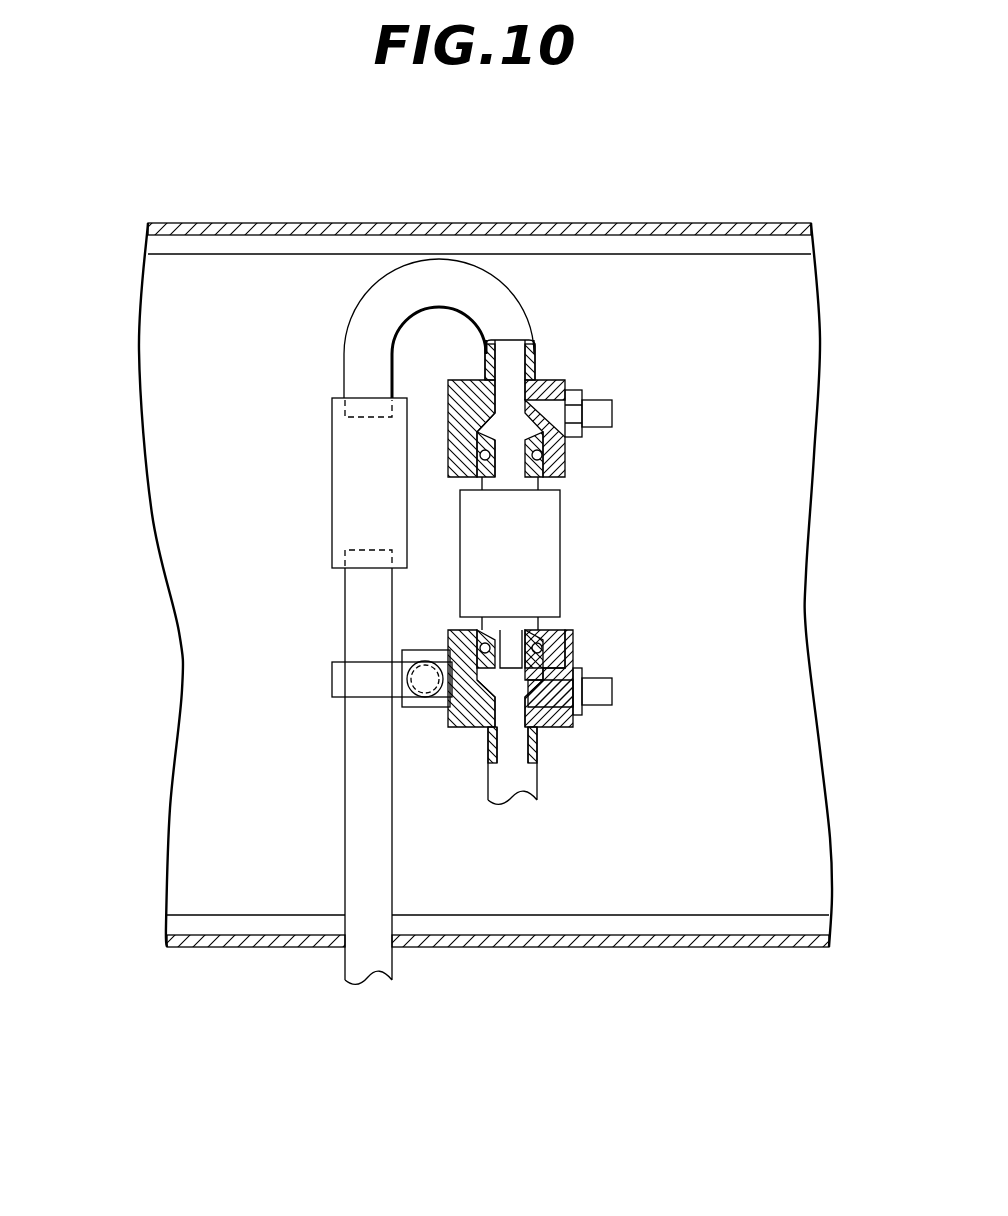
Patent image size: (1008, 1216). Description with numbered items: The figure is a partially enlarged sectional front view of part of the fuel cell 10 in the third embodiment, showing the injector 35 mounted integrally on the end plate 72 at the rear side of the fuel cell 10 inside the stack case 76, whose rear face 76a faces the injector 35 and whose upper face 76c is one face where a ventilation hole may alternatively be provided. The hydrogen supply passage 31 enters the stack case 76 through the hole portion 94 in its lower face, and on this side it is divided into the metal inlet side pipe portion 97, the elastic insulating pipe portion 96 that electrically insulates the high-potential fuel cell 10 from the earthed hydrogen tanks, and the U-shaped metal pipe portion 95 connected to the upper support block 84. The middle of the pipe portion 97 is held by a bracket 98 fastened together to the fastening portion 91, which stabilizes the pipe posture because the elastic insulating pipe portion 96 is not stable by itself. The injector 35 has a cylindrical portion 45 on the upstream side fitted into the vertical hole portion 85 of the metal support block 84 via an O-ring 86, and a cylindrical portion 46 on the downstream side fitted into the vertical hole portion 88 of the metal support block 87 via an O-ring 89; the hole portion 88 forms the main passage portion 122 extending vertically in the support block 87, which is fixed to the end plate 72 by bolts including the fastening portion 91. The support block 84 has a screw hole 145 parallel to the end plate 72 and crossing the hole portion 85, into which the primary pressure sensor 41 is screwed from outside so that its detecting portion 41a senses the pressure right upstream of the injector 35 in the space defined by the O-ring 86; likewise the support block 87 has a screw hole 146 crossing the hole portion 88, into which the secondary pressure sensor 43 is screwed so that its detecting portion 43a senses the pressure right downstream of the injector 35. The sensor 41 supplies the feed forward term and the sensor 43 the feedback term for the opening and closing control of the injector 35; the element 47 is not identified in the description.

The upper face 76c is at (323, 222).
The fuel cell 10 is at (130, 334).
The end plate 72 is at (815, 884).
The stack case 76 is at (207, 950).
The rear face 76a is at (255, 948).
The hole portion 94 is at (400, 950).
The pipe portion 95 is at (500, 298).
The insulating pipe portion 96 is at (345, 522).
The pipe portion 97 is at (355, 757).
The hydrogen supply passage 31 is at (347, 963).
The hole portion 85 is at (497, 397).
The support block 84 is at (463, 379).
The cylindrical portion 45 is at (452, 412).
The O-ring 86 is at (450, 457).
The screw hole 145 is at (556, 382).
The primary pressure sensor 41 is at (613, 413).
The detecting portion 41a is at (585, 433).
The injector 35 is at (565, 536).
The valve chamber 47 is at (482, 580).
The O-ring 89 is at (565, 632).
The support block 87 is at (452, 733).
The fastening portion 91 is at (497, 687).
The main passage portion 122 is at (468, 690).
The bracket 98 is at (340, 682).
The cylindrical portion 46 is at (420, 684).
The detecting portion 43a is at (575, 665).
The secondary pressure sensor 43 is at (613, 692).
The screw hole 146 is at (540, 700).
The hole portion 88 is at (487, 740).